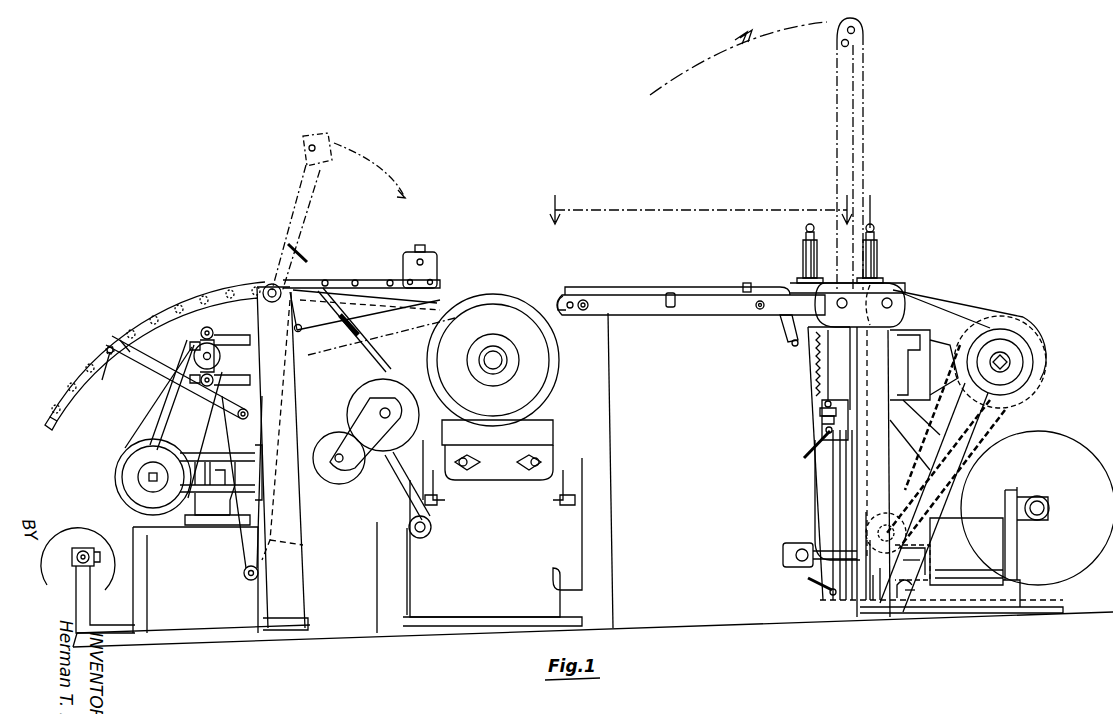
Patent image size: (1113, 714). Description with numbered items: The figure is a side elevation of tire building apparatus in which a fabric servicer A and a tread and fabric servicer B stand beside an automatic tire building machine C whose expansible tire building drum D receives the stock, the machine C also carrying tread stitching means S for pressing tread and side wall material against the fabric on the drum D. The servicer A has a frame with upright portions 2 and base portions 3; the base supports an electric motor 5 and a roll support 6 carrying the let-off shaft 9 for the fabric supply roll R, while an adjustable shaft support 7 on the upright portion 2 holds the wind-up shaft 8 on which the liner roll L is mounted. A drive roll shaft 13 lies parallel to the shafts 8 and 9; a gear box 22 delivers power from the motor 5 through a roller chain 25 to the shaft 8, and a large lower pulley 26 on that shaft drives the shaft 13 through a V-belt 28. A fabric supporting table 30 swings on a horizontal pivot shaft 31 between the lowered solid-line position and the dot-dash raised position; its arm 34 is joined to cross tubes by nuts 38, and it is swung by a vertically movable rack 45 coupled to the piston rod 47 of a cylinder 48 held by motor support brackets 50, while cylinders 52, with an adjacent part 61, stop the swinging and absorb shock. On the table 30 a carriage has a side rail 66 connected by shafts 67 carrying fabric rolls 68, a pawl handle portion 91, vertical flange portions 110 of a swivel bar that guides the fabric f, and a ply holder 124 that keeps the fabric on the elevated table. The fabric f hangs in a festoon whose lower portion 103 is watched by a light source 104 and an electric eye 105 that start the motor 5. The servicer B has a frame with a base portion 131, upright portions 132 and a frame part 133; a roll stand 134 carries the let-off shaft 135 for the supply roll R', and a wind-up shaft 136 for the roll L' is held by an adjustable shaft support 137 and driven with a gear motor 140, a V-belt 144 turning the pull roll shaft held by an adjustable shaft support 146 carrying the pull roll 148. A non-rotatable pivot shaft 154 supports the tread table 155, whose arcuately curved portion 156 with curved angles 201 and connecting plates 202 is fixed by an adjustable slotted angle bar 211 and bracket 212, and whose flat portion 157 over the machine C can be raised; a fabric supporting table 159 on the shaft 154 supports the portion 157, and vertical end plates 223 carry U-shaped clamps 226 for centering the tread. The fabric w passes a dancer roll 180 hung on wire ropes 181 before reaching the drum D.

The upright portions 2 is at (847, 376).
The base portions 3 is at (1050, 608).
The two-speed constant-torque electric motor 5 is at (949, 554).
The roll support 6 is at (1028, 492).
The adjustable shaft support 7 is at (934, 497).
The wind-up shaft 8 is at (1008, 364).
The let-off shaft 9 is at (1046, 496).
The drive roll shaft 13 is at (871, 305).
The gear box 22 is at (894, 542).
The roller chain 25 is at (972, 442).
The large lower pulley 26 is at (1038, 342).
The V-belt 28 is at (950, 300).
The fabric supporting table 30 is at (707, 325).
The horizontal pivot shaft 31 is at (830, 363).
The arm 34 is at (620, 292).
The nuts 38 is at (585, 312).
The vertically movable rack 45 is at (815, 368).
The piston rod 47 is at (820, 416).
The guide rod 48 is at (815, 470).
The motor support brackets 50 is at (805, 436).
The cylinders 52 is at (803, 262).
The rod 61 is at (870, 212).
The side rail 66 is at (702, 286).
The shafts 67 is at (575, 300).
The cylindrical fabric roll 68 is at (562, 296).
The handle portion 91 is at (683, 284).
The festoon portion 103 is at (820, 548).
The light source 104 is at (914, 605).
The electric eye 105 is at (782, 548).
The vertical flange portions 110 is at (782, 338).
The ply holder 124 is at (747, 282).
The base portion 131 is at (216, 638).
The upright portions 132 is at (284, 612).
The frame 133 is at (160, 630).
The roll stand 134 is at (88, 635).
The let-off shaft 135 is at (95, 555).
The wind-up shaft 136 is at (158, 470).
The adjustable shaft support 137 is at (212, 510).
The gear motor 140 is at (222, 525).
The V-belt 144 is at (150, 412).
The adjustable shaft support 146 is at (262, 370).
The aluminum pull roll 148 is at (196, 360).
The cylindrical non-rotatable pivot shaft 154 is at (269, 285).
The tread table 155 is at (165, 296).
The arcuately curved portion 156 is at (88, 365).
The flat portion 157 is at (310, 190).
The fabric supporting table 159 is at (390, 300).
The dancer roll 180 is at (252, 582).
The wire ropes 181 is at (262, 545).
The curved angles 201 is at (133, 318).
The connecting plates 202 is at (248, 290).
The adjustable slotted angle bar 211 is at (145, 372).
The bracket 212 is at (258, 412).
The vertical end plates 223 is at (437, 265).
The U-shaped clamps 226 is at (406, 229).
The fabric servicer A is at (938, 280).
The tread and fabric servicer B is at (207, 258).
The automatic tire building machine C is at (620, 437).
The expansible tire building drum D is at (498, 284).
The tread stitching means S is at (348, 396).
The liner roll L is at (1031, 353).
The fabric supply roll R is at (1037, 490).
The liner roll L' is at (89, 464).
The supply roll R' is at (75, 543).
The fabric sheet f is at (812, 485).
The fabric w is at (269, 436).